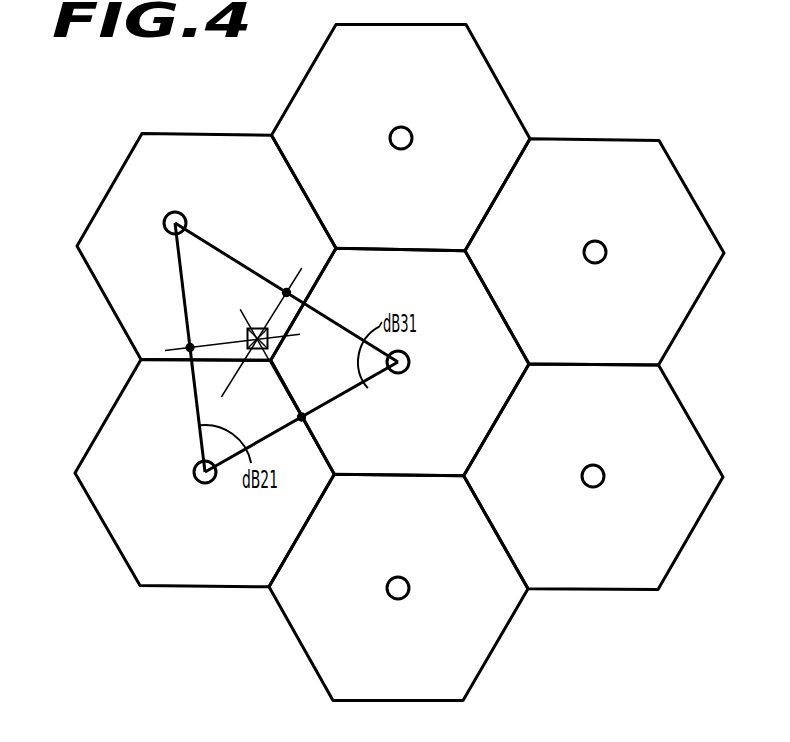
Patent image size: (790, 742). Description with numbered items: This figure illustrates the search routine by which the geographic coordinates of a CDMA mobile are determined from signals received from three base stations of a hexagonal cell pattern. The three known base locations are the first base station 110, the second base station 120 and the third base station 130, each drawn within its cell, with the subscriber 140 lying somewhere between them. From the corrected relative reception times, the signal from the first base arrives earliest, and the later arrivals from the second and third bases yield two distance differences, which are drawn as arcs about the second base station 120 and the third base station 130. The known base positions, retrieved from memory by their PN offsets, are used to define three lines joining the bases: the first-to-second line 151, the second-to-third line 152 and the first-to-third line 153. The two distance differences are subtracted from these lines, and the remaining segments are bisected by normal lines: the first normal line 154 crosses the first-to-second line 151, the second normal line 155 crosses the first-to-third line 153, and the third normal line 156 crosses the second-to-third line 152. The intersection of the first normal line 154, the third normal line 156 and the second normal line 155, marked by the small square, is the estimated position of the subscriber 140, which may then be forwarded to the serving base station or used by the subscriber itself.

The base station 110 is at (206, 484).
The base station 120 is at (177, 211).
The base station 130 is at (410, 363).
The subscriber 140 is at (257, 322).
The line L12 151 is at (180, 273).
The line L23 152 is at (225, 251).
The line L13 153 is at (301, 407).
The normal line N12 154 is at (178, 348).
The normal line N13 155 is at (297, 276).
The normal line N23 156 is at (316, 441).